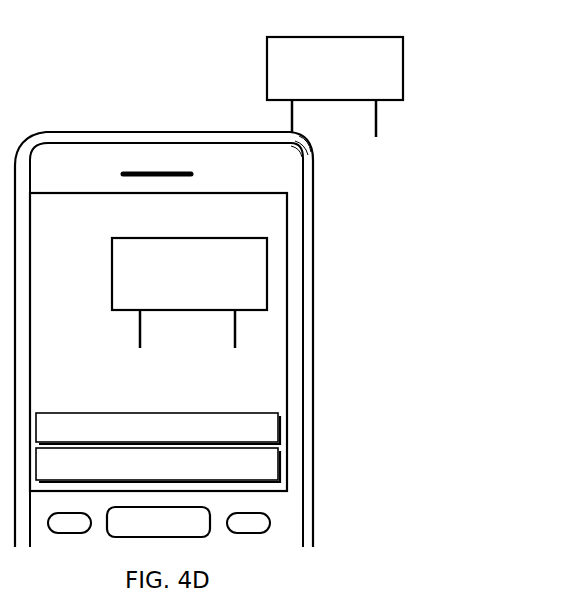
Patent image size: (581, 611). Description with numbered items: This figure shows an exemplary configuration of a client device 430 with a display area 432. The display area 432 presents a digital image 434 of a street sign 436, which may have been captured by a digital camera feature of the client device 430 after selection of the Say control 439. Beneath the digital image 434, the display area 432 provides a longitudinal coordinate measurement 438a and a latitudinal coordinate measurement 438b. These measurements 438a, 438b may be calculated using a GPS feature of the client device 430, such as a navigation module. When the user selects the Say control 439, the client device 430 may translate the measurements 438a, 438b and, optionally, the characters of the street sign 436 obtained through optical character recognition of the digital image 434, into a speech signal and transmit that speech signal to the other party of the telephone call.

The client device 430 is at (197, 132).
The display area 432 is at (225, 193).
The digital image 434 is at (223, 238).
The street sign 436 is at (375, 37).
The longitudinal coordinate measurement 438a is at (158, 428).
The latitudinal coordinate measurement 438b is at (158, 465).
The Say control 439 is at (210, 536).